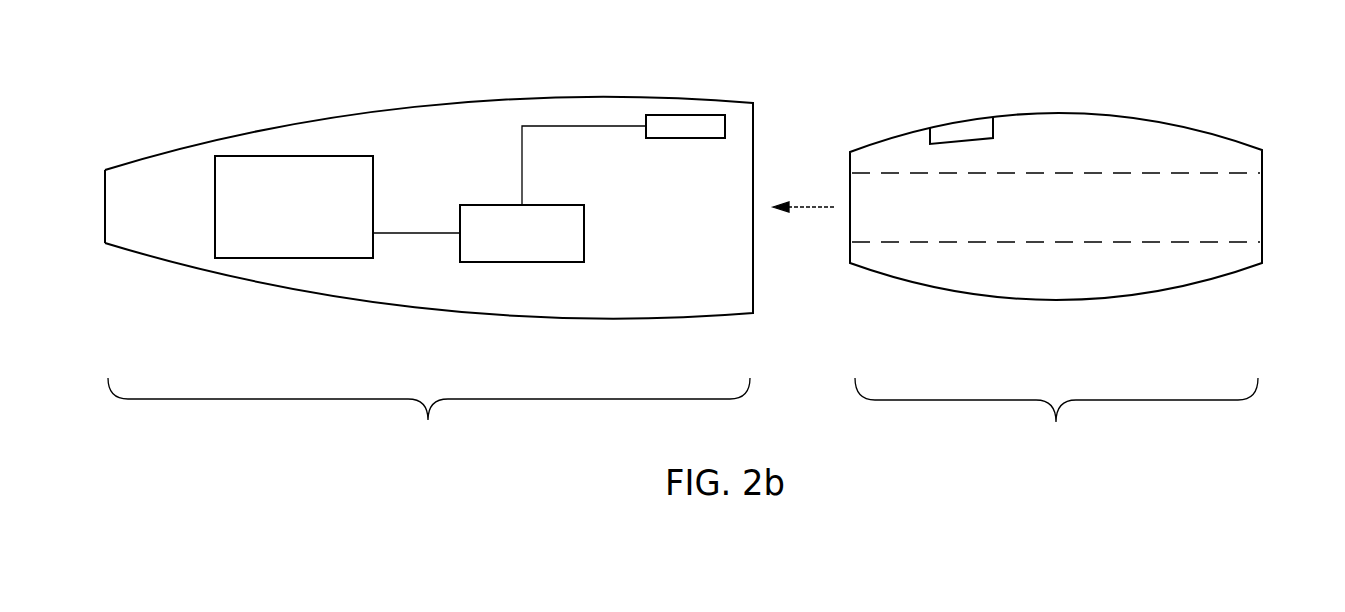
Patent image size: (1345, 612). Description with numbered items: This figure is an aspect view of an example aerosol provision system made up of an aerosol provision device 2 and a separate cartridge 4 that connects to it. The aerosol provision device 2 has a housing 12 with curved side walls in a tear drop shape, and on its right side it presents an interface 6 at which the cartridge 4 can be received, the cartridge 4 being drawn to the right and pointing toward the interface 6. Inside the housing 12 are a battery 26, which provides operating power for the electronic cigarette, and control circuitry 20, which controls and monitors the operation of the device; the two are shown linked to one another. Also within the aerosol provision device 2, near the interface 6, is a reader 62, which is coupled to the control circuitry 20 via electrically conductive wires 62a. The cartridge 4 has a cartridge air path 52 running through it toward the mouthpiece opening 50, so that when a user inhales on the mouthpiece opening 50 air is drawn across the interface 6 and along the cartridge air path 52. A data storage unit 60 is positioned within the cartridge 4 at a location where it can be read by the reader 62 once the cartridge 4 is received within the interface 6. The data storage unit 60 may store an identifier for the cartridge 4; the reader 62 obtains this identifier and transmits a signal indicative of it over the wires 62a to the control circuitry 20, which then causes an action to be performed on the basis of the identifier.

The aerosol provision device 2 is at (429, 417).
The cartridge 4 is at (1056, 418).
The interface 6 is at (757, 145).
The outer housing 12 is at (143, 157).
The control circuitry 20 is at (510, 246).
The battery 26 is at (261, 198).
The mouthpiece opening 50 is at (1264, 200).
The cartridge air path 52 is at (1082, 225).
The data storage unit 60 is at (960, 128).
The reader 62 is at (685, 125).
The electrically conductive wires 62a is at (523, 182).